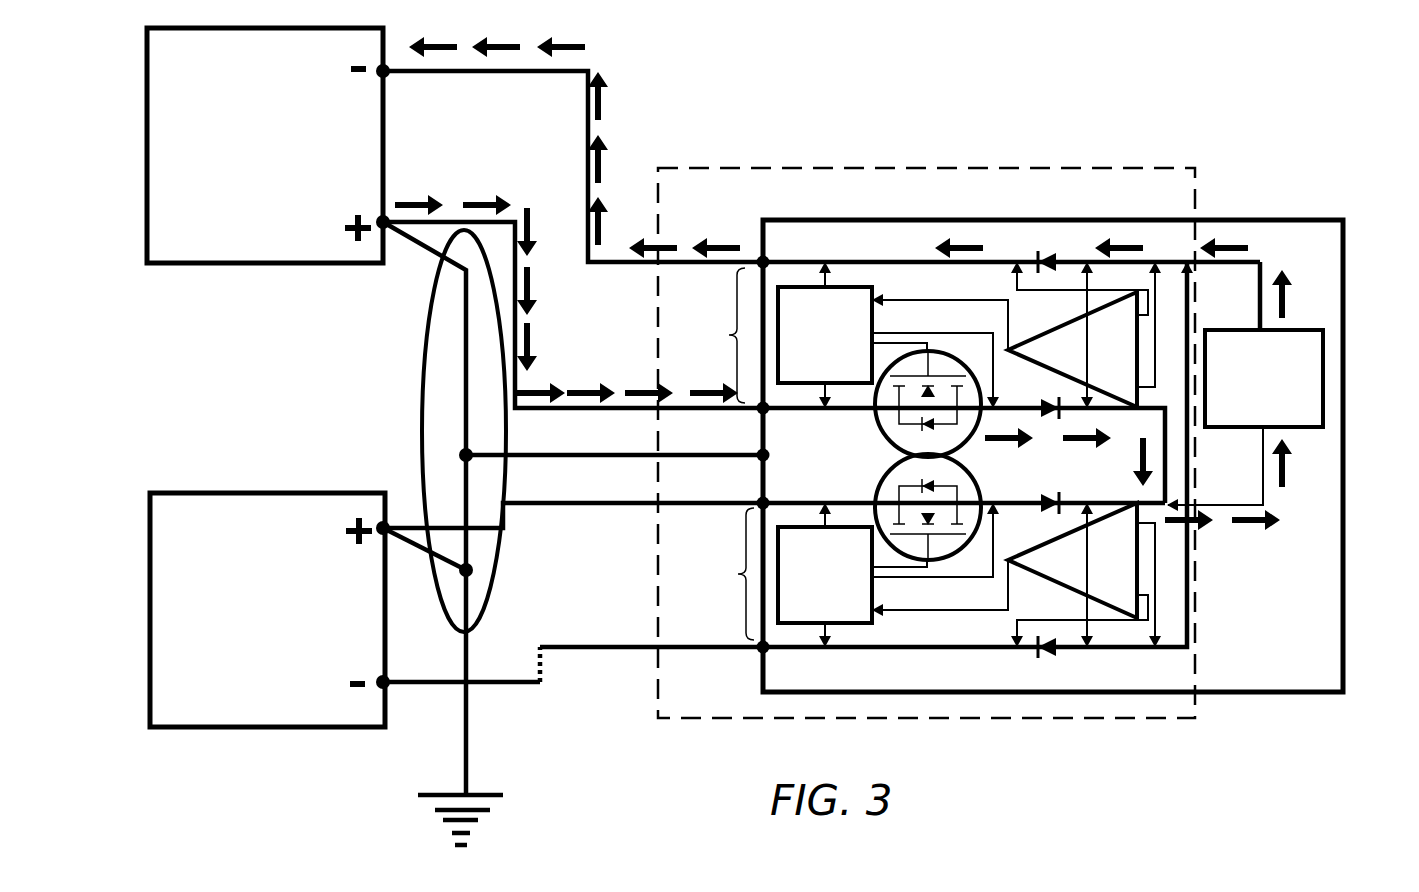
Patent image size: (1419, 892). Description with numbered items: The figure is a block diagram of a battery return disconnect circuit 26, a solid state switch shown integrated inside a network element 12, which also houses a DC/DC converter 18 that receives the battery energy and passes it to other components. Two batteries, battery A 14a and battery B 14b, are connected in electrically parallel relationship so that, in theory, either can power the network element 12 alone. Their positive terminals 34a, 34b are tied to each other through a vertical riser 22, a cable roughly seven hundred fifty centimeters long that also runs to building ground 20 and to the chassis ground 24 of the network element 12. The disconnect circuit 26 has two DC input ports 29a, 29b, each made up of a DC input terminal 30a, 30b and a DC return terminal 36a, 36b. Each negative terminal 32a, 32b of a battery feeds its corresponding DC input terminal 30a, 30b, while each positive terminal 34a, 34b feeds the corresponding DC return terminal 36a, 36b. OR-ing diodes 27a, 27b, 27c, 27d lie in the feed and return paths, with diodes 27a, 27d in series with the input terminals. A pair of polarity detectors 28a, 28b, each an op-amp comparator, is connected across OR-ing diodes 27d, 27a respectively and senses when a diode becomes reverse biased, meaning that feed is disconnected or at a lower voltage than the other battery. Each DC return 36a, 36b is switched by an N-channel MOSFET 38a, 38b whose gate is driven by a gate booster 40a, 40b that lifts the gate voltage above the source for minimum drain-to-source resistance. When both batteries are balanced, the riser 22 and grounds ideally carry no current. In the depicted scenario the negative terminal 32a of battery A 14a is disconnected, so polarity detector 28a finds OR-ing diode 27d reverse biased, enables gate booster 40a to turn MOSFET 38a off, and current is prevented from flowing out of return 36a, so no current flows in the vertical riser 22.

The network element 12 is at (1345, 417).
The battery A 14a is at (150, 608).
The battery B 14b is at (147, 135).
The DC/DC converter 18 is at (1325, 377).
The building ground 20 is at (480, 795).
The vertical riser 22 is at (423, 400).
The chassis ground 24 is at (763, 455).
The battery return disconnect circuit 26 is at (1077, 168).
The OR-ing diode 27a is at (1040, 255).
The OR-ing diode 27b is at (1055, 398).
The OR-ing diode 27c is at (1053, 493).
The OR-ing diode 27d is at (1040, 663).
The polarity detector 28a is at (1084, 575).
The polarity detector 28b is at (1084, 335).
The DC input port 29a is at (742, 548).
The DC input port 29b is at (737, 320).
The DC input terminal 30a is at (763, 647).
The DC input terminal 30b is at (763, 262).
The negative terminal 32a is at (380, 690).
The negative terminal 32b is at (378, 68).
The positive terminal 34a is at (380, 535).
The positive terminal 34b is at (378, 220).
The DC return terminal 36a is at (763, 503).
The DC return terminal 36b is at (764, 408).
The N-channel MOSFET 38a is at (876, 493).
The N-channel MOSFET 38b is at (876, 418).
The gate booster 40a is at (893, 575).
The gate booster 40b is at (894, 335).